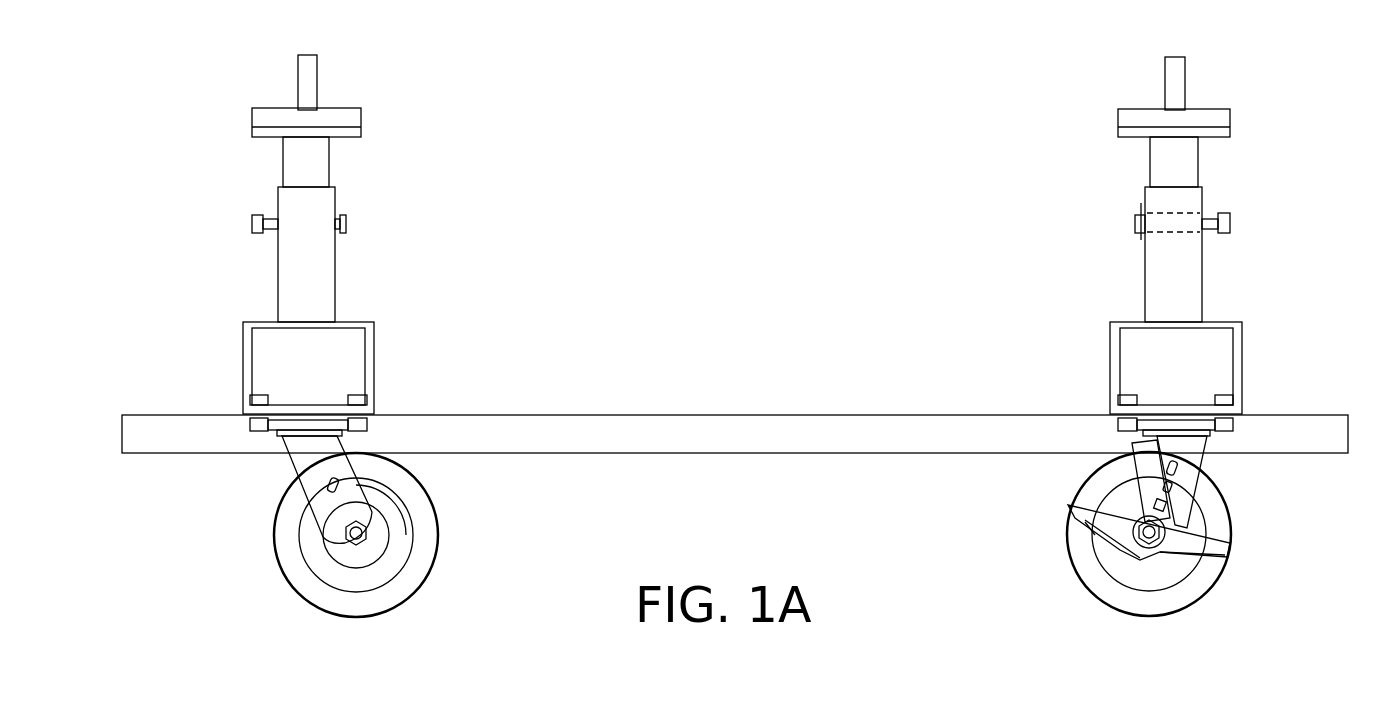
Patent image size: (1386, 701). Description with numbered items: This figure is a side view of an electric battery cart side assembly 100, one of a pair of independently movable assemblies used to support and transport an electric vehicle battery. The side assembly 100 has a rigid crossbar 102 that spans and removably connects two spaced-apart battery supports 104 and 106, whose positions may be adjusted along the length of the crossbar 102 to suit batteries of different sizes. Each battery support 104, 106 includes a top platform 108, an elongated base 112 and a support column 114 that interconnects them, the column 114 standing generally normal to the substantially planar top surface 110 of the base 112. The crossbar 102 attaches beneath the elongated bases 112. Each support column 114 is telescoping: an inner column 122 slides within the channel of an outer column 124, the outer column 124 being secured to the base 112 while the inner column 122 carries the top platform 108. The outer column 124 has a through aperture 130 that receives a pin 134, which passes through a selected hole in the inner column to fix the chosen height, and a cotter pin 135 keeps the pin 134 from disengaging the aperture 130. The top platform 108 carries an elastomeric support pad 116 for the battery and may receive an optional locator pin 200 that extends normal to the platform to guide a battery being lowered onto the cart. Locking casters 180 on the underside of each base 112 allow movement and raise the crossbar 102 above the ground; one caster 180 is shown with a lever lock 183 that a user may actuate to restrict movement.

The battery cart side assembly 100 is at (698, 113).
The rigid crossbar 102 is at (845, 428).
The battery support 104 is at (367, 277).
The battery support 106 is at (1095, 247).
The top platform 108 is at (360, 130).
The top surface 110 is at (362, 320).
The elongated base 112 is at (245, 322).
The support column 114 is at (305, 257).
The support pad 116 is at (267, 118).
The inner column 122 is at (325, 155).
The outer column 124 is at (327, 203).
The through aperture 130 is at (1187, 228).
The pin 134 is at (1215, 213).
The cotter pin 135 is at (1138, 208).
The locking caster 180 is at (292, 577).
The lever lock 183 is at (1235, 543).
The locator pin 200 is at (1178, 93).